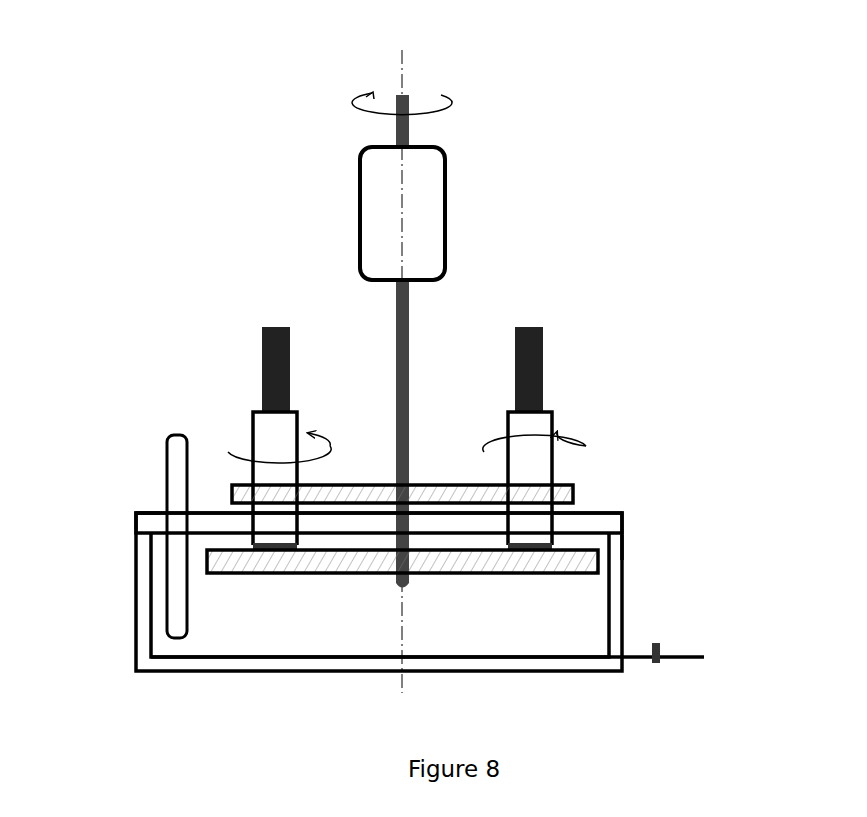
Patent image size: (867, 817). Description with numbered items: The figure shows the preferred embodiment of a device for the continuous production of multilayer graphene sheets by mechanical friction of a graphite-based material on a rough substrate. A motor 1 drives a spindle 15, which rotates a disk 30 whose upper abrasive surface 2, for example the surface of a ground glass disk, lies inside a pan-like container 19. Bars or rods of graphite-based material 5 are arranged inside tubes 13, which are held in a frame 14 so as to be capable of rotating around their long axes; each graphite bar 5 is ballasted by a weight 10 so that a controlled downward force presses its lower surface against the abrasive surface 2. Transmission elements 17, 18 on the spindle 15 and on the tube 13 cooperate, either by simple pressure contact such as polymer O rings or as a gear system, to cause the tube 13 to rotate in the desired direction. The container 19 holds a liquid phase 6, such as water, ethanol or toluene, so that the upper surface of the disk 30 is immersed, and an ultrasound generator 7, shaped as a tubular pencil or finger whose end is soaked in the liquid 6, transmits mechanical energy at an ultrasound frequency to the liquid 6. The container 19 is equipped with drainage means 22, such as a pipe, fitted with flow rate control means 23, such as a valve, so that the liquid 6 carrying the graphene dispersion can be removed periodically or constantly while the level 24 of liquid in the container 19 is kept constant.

The motor 1 is at (448, 224).
The abrasive surface 2 is at (357, 542).
The graphite bar 5 is at (249, 552).
The liquid phase 6 is at (232, 632).
The ultrasound generator 7 is at (178, 433).
The weight 10 is at (550, 386).
The tube containing graphite 13 is at (555, 419).
The frame 14 is at (155, 509).
The spindle 15 is at (413, 130).
The transmission element 17 is at (435, 474).
The transmission element 18 is at (579, 493).
The container 19 is at (627, 588).
The drainage means 22 is at (696, 654).
The flow rate control means 23 is at (656, 670).
The level of the liquid 24 is at (597, 524).
The disk 30 is at (624, 544).